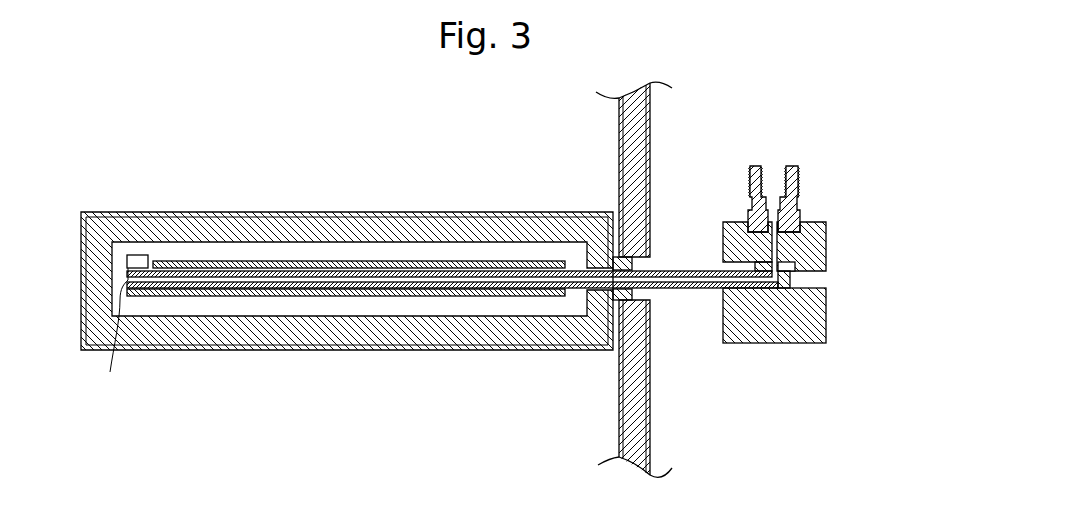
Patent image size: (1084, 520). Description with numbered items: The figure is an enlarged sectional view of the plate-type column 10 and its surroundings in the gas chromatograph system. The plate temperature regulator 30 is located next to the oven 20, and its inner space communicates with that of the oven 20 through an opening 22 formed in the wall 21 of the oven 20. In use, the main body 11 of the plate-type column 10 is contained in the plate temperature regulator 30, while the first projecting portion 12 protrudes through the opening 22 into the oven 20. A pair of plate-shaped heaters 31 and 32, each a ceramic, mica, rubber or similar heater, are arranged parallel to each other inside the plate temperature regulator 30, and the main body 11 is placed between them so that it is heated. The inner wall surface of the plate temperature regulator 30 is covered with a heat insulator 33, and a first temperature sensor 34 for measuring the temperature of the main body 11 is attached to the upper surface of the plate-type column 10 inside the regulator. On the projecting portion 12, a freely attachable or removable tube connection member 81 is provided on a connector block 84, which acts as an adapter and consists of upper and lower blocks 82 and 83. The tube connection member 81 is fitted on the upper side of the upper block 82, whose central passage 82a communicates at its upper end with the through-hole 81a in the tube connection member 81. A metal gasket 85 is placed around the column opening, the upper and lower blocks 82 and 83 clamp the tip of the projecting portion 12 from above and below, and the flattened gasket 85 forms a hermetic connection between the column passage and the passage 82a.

The plate-type column 10 is at (429, 288).
The main body 11 is at (108, 334).
The first projecting portion 12 is at (687, 291).
The oven 20 is at (674, 279).
The wall 21 is at (619, 165).
The opening 22 is at (652, 293).
The plate temperature regulator 30 is at (347, 289).
The plate-shaped heater 31 is at (350, 260).
The plate-shaped heater 32 is at (352, 297).
The heat insulator 33 is at (498, 215).
The first temperature sensor 34 is at (138, 257).
The tube connection member 81 is at (798, 180).
The through-hole 81a is at (773, 198).
The upper block 82 is at (802, 225).
The passage 82a is at (775, 252).
The lower block 83 is at (796, 315).
The connector block 84 is at (821, 246).
The gasket 85 is at (793, 272).